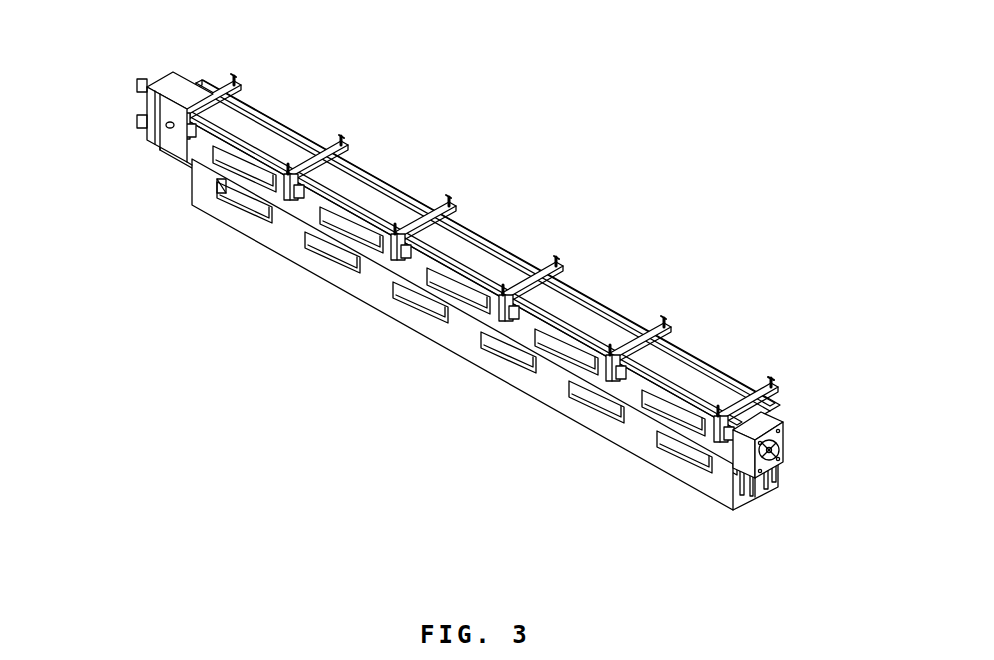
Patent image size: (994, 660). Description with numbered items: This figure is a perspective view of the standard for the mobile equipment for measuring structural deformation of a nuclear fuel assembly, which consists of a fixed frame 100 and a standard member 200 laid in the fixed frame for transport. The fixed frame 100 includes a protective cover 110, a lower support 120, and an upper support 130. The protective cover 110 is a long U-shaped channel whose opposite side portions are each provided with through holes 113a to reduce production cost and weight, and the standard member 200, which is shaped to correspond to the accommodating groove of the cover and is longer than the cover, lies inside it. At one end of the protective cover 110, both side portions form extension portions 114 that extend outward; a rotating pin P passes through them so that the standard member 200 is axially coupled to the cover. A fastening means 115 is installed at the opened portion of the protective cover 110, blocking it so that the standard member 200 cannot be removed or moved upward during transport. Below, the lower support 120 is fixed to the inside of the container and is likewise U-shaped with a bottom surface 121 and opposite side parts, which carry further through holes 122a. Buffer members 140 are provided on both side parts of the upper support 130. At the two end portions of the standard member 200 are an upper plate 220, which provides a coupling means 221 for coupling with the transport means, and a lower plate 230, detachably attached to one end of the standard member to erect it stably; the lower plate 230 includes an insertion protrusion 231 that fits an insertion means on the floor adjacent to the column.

The fixed frame 100 is at (492, 124).
The protective cover 110 is at (302, 213).
The through holes 113a is at (348, 227).
The extension portions 114 is at (155, 107).
The fastening means 115 is at (547, 280).
The lower support 120 is at (435, 342).
The bottom surface 121 is at (760, 490).
The through holes 122a is at (510, 360).
The upper support 130 is at (768, 475).
The buffer members 140 is at (222, 195).
The standard member 200 is at (268, 133).
The upper plate 220 is at (784, 423).
The coupling means 221 is at (781, 444).
The lower plate 230 is at (168, 68).
The insertion protrusion 231 is at (138, 113).
The rotating pin P is at (171, 128).